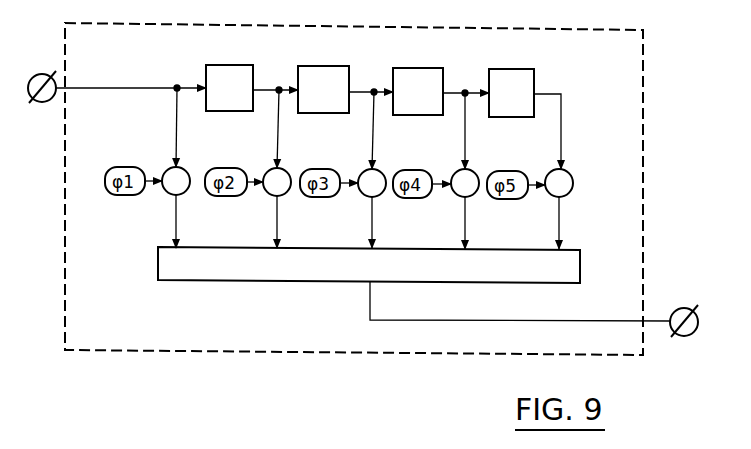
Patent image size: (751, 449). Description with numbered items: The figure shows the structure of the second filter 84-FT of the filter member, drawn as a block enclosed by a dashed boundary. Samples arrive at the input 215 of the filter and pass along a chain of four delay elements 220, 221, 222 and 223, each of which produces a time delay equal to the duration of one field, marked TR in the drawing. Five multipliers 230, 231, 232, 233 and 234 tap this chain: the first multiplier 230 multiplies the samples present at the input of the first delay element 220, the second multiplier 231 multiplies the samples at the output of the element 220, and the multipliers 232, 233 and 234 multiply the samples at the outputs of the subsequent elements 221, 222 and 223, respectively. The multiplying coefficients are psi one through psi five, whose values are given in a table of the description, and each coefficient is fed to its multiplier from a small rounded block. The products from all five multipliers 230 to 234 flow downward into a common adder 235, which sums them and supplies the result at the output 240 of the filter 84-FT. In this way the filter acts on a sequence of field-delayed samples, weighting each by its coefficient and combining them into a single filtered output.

The filter 84-FT is at (232, 330).
The input 215 is at (37, 75).
The delay element 220 is at (240, 65).
The delay element 221 is at (335, 66).
The delay element 222 is at (430, 68).
The delay element 223 is at (525, 69).
The multiplier 230 is at (167, 195).
The multiplier 231 is at (287, 195).
The multiplier 232 is at (383, 196).
The multiplier 233 is at (475, 196).
The multiplier 234 is at (570, 196).
The adder 235 is at (224, 268).
The output 240 is at (698, 320).